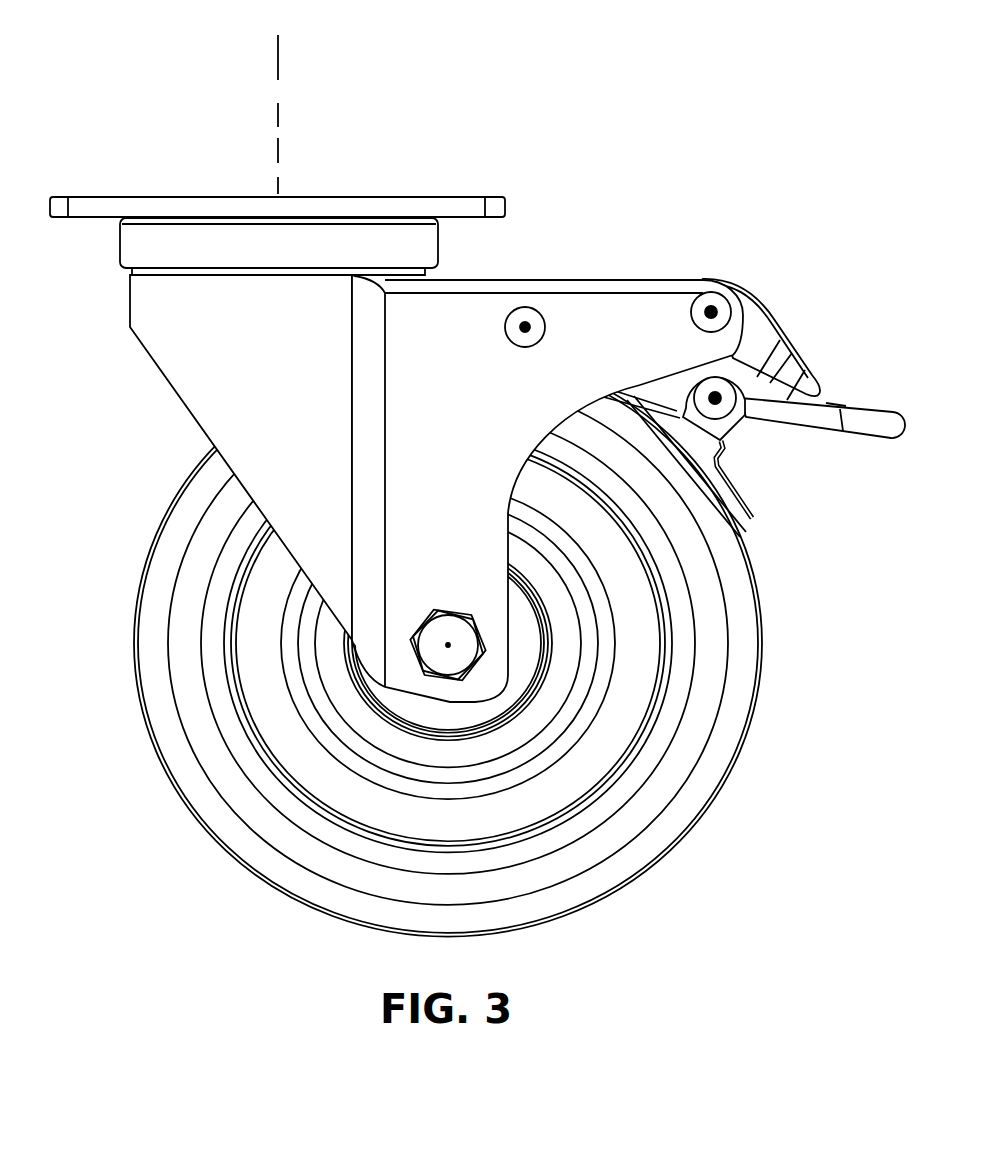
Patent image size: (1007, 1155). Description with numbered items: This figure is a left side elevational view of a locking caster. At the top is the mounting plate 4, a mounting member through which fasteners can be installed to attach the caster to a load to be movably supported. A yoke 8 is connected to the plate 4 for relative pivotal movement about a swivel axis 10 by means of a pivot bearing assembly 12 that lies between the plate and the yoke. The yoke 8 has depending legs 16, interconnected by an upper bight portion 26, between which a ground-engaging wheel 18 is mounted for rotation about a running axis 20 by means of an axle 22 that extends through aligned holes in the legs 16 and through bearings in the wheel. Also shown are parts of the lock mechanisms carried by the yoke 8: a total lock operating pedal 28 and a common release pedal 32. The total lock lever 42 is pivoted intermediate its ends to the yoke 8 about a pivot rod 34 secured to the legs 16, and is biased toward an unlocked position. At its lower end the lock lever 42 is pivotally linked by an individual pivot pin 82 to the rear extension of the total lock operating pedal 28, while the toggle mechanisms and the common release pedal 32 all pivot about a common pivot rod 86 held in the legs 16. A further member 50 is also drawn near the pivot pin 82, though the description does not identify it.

The plate 4 is at (456, 197).
The yoke 8 is at (215, 397).
The swivel axis 10 is at (278, 55).
The pivot bearing assembly 12 is at (127, 250).
The legs 16 is at (463, 452).
The ground-engaging wheel 18 is at (668, 832).
The running axis 20 is at (450, 647).
The axle 22 is at (461, 612).
The upper bight portion 26 is at (530, 285).
The total lock operating pedal 28 is at (872, 433).
The common release pedal 32 is at (770, 337).
The pivot rod 34 is at (544, 336).
The total lock lever 42 is at (648, 407).
The connecting rod 50 is at (748, 506).
The pivot pin 82 is at (722, 412).
The common pivot rod 86 is at (702, 323).